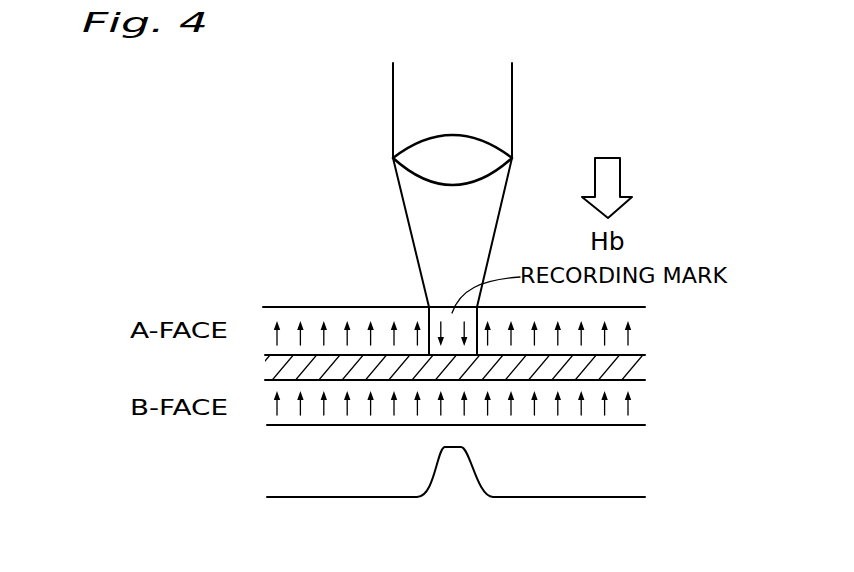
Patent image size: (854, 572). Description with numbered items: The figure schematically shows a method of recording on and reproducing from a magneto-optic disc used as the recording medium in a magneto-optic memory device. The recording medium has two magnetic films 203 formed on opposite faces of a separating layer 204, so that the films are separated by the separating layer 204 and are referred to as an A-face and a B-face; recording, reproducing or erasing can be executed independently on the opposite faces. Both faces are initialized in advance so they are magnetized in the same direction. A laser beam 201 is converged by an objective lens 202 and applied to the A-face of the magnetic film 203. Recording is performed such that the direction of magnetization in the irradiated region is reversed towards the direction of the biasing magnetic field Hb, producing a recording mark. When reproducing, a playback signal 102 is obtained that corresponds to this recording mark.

The laser beam 201 is at (495, 102).
The objective lens 202 is at (492, 145).
The magnetic film 203 is at (637, 332).
The separating layer 204 is at (632, 365).
The playback signal 102 is at (329, 487).